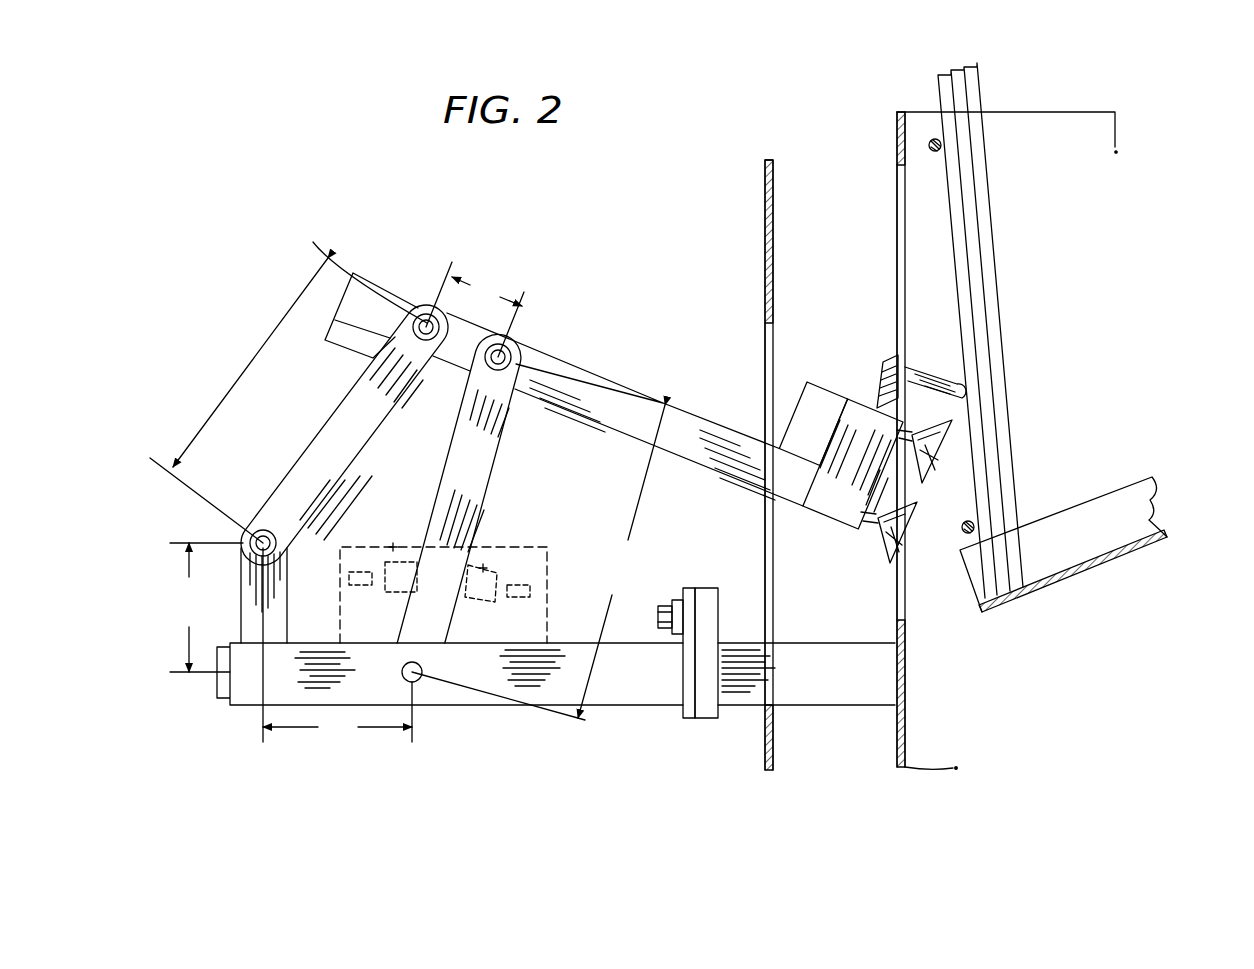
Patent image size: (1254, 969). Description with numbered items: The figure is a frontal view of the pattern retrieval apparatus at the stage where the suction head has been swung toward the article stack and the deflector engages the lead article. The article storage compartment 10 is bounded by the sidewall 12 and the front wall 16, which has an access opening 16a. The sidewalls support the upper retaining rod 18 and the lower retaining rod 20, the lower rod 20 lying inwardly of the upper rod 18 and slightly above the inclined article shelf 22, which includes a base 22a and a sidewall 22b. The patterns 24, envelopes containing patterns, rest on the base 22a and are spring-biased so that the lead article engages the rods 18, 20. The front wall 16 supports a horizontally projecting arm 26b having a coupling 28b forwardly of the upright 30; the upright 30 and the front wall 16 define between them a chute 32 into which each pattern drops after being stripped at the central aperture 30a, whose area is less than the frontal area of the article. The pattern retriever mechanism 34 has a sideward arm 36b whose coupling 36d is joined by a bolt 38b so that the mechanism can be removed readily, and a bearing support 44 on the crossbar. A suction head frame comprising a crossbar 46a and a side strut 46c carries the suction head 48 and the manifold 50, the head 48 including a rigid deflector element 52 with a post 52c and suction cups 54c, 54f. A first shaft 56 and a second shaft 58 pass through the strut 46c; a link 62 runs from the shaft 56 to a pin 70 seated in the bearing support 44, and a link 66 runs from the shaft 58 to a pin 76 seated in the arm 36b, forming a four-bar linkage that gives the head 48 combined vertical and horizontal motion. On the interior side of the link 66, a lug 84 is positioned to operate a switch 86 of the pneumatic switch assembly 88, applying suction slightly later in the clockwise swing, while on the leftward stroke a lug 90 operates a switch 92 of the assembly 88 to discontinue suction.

The article storage compartment 10 is at (1050, 252).
The sidewall 12 is at (1052, 108).
The front wall 16 is at (900, 140).
The access opening 16a is at (900, 228).
The upper retaining rod 18 is at (933, 140).
The lower retaining rod 20 is at (965, 522).
The inclined article shelf 22 is at (1098, 514).
The shelf base 22a is at (1145, 532).
The shelf sidewall 22b is at (1130, 498).
The patterns 24 is at (973, 65).
The horizontally projecting arm 26b is at (823, 692).
The coupling 28b is at (710, 590).
The upright 30 is at (765, 218).
The central aperture 30a is at (764, 355).
The chute 32 is at (810, 208).
The pattern retriever mechanism 34 is at (386, 268).
The sideward arm 36b is at (627, 692).
The coupling 36d is at (688, 588).
The bolt 38b is at (658, 617).
The bearing support 44 is at (243, 598).
The crossbar 46a is at (343, 333).
The side strut 46c is at (572, 364).
The suction head 48 is at (846, 451).
The manifold 50 is at (807, 397).
The rigid deflector element 52 is at (878, 376).
The post 52c is at (930, 373).
The suction cup 54c is at (953, 433).
The suction cup 54f is at (875, 550).
The first shaft 56 is at (426, 325).
The second shaft 58 is at (500, 356).
The link 62 is at (322, 428).
The link 66 is at (495, 425).
The pin 70 is at (262, 541).
The pin 76 is at (417, 680).
The lug 84 is at (485, 555).
The switch 86 is at (530, 590).
The pneumatic switch assembly 88 is at (532, 543).
The lug 90 is at (393, 547).
The switch 92 is at (349, 578).